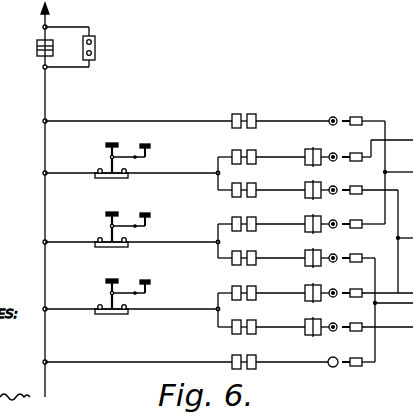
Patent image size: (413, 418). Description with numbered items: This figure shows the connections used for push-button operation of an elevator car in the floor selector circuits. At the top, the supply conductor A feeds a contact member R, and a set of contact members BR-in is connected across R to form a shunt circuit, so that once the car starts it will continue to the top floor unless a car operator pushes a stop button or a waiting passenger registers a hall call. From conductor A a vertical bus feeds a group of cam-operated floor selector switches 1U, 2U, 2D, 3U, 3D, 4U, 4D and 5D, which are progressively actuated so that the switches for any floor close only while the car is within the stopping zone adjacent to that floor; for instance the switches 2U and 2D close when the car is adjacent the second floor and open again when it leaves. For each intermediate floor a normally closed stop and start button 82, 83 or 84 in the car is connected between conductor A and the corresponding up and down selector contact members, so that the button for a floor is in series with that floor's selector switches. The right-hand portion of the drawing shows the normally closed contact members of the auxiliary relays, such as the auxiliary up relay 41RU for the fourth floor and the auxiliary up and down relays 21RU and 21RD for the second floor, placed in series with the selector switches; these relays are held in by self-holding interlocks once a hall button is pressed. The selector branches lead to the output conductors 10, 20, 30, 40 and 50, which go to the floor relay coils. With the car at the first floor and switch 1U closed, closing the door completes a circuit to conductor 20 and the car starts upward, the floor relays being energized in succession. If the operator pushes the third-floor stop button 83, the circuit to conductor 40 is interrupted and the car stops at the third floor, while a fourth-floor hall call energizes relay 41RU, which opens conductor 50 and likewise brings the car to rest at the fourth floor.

The conductor A is at (43, 27).
The contact member R is at (37, 48).
The contact members BR-in is at (93, 48).
The cam-operated selector switch 5D is at (235, 113).
The cam-operated selector switch 4U is at (230, 152).
The cam-operated selector switch 4D is at (230, 192).
The cam-operated selector switch 3U is at (230, 222).
The cam-operated selector switch 3D is at (230, 261).
The cam-operated selector switch 2U is at (230, 292).
The cam-operated selector switch 2D is at (230, 329).
The cam-operated selector switch 1U is at (231, 359).
The auxiliary up relay 41RU is at (306, 151).
The auxiliary up relay 21RU is at (307, 287).
The auxiliary down relay 21RD is at (308, 321).
The stop and start button 84 is at (110, 165).
The stop and start button 83 is at (110, 234).
The stop and start button 82 is at (110, 301).
The conductor 20 is at (348, 367).
The conductor 50 is at (404, 144).
The conductor 40 is at (404, 176).
The conductor 30 is at (410, 242).
The conductor 10 is at (398, 328).